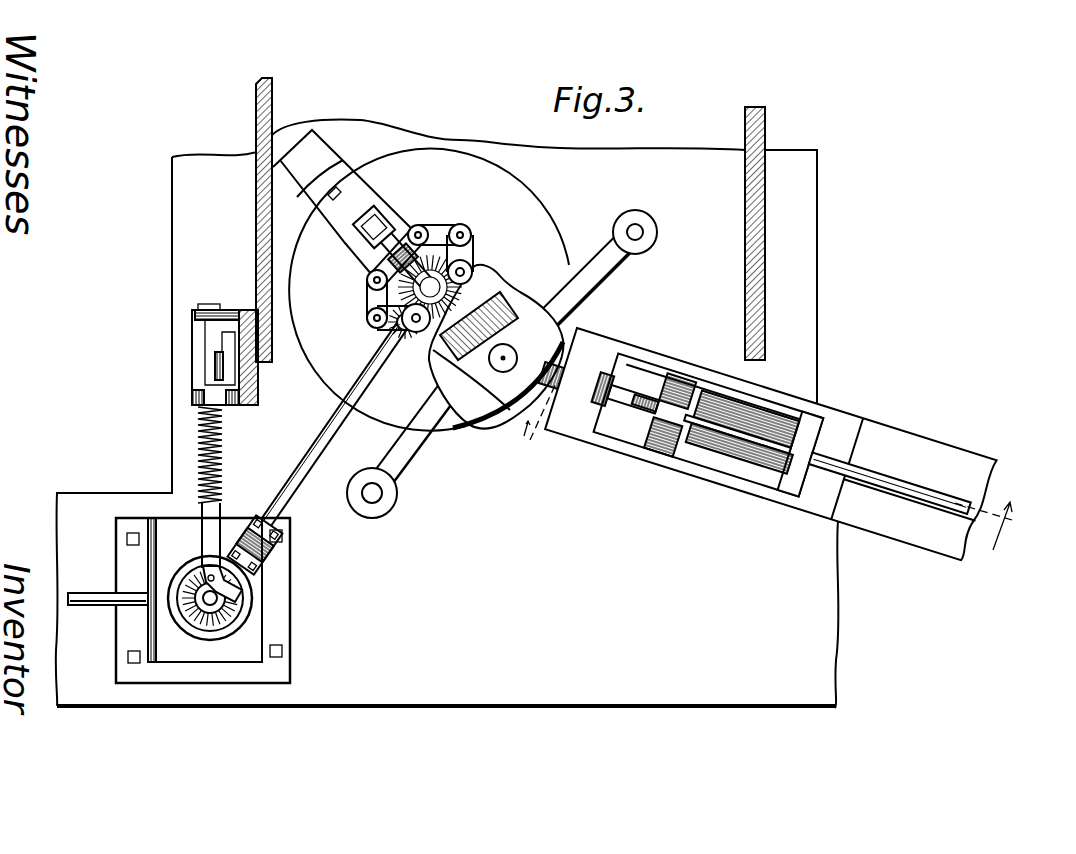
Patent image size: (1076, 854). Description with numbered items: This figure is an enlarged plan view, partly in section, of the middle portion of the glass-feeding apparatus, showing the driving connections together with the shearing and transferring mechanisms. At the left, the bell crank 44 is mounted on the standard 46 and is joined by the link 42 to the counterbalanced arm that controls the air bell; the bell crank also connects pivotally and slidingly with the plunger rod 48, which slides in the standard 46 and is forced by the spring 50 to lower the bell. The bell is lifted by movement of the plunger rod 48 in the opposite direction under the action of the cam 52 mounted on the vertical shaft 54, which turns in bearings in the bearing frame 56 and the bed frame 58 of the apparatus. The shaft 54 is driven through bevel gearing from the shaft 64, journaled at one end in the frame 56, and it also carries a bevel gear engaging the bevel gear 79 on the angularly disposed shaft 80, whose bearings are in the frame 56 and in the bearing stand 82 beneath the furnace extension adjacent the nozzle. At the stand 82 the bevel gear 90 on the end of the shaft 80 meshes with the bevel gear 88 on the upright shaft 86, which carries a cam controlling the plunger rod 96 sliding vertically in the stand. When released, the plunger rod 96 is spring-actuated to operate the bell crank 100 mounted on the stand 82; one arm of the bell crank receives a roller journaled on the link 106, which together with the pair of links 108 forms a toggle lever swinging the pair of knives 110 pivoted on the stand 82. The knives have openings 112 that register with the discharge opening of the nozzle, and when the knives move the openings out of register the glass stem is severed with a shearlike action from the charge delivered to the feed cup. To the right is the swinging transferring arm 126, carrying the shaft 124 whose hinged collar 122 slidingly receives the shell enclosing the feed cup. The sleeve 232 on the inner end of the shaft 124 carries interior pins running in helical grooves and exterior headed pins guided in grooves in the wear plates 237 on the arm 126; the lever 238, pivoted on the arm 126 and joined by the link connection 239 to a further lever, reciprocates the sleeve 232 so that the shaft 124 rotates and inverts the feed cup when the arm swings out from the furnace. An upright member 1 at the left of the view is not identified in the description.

The frame post 1 is at (258, 110).
The links 108 is at (432, 226).
The bearing stand 82 is at (362, 194).
The plunger rod 96 is at (362, 224).
The bell crank 100 is at (372, 255).
The link 106 is at (384, 268).
The shaft 86 is at (466, 262).
The knives 110 is at (520, 310).
The bevel gear 88 is at (486, 322).
The bevel gear 90 is at (432, 362).
The openings 112 is at (503, 374).
The hinged collar 122 is at (512, 400).
The transferring arm 126 is at (572, 428).
The shaft 124 is at (612, 395).
The sleeve 232 is at (737, 412).
The wear plates 237 is at (780, 402).
The lever 238 is at (688, 450).
The link connection 239 is at (932, 505).
The bell crank 44 is at (208, 325).
The link 42 is at (213, 366).
The standard 46 is at (250, 406).
The spring 50 is at (198, 464).
The plunger rod 48 is at (208, 517).
The shaft 64 is at (92, 592).
The shaft 80 is at (292, 500).
The bevel gear 79 is at (244, 582).
The bearing frame 56 is at (257, 628).
The shaft 54 is at (210, 660).
The cam 52 is at (216, 607).
The bed frame 58 is at (313, 693).